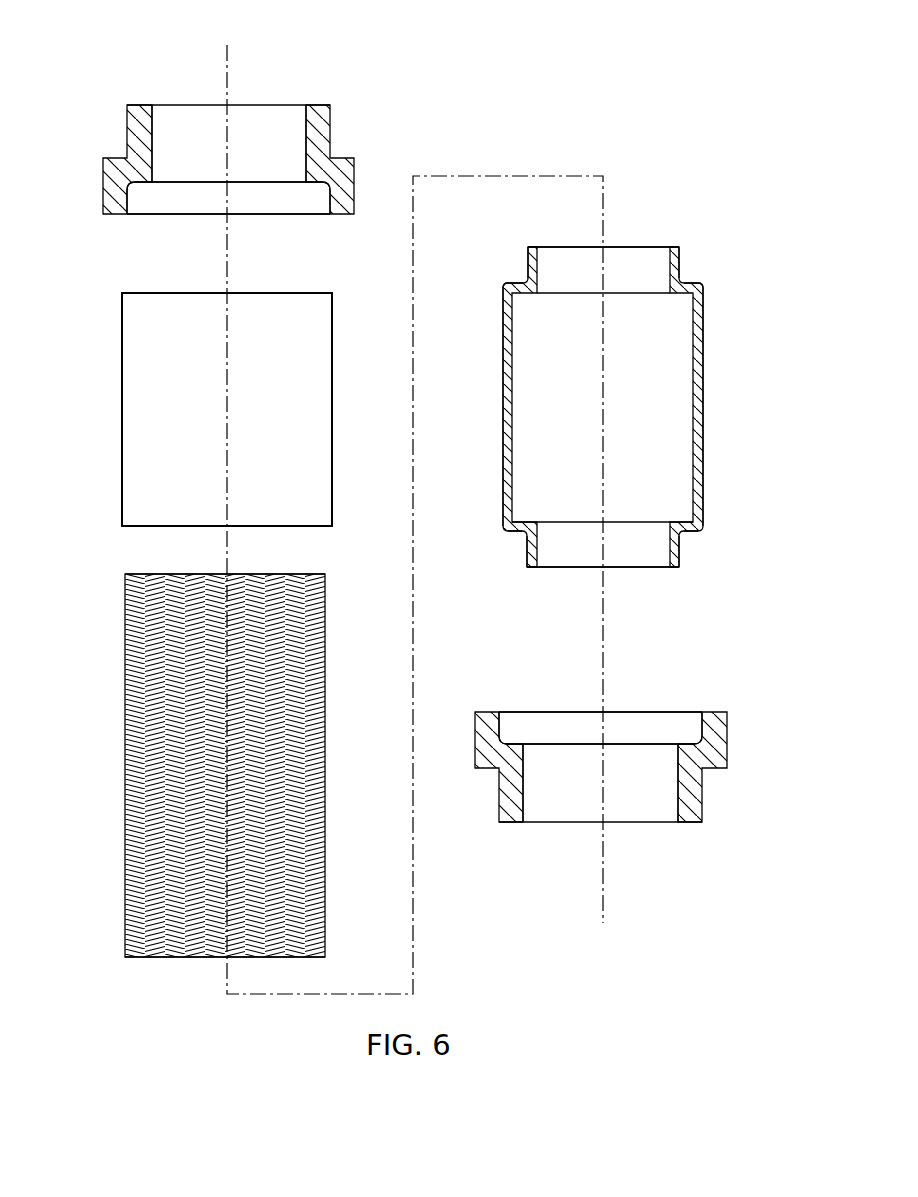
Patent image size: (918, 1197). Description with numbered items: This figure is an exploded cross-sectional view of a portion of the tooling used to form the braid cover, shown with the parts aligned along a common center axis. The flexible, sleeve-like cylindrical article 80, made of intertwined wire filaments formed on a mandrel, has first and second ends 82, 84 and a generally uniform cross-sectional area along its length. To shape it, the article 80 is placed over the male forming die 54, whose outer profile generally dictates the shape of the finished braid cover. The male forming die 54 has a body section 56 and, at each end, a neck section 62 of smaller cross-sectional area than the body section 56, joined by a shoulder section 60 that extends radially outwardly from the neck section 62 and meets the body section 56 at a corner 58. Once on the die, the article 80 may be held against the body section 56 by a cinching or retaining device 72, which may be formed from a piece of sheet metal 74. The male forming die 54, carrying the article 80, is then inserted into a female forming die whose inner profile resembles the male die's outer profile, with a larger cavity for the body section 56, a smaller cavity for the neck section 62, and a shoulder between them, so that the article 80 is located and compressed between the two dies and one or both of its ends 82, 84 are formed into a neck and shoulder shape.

The male forming die 54 is at (718, 389).
The body section 56 is at (704, 470).
The corner 58 is at (705, 289).
The shoulder section 60 is at (688, 287).
The neck section 62 is at (680, 252).
The retaining device 72 is at (104, 333).
The sheet metal 74 is at (121, 460).
The sleeve-like cylindrical article 80 is at (106, 705).
The first end 82 is at (126, 603).
The second end 84 is at (123, 920).